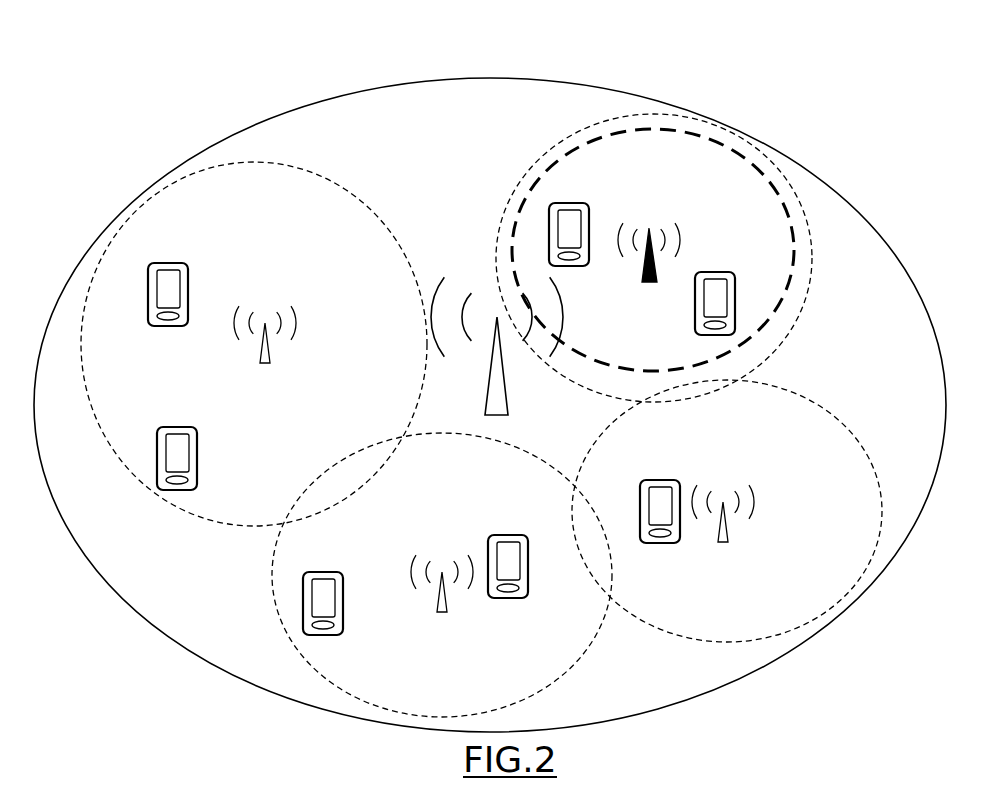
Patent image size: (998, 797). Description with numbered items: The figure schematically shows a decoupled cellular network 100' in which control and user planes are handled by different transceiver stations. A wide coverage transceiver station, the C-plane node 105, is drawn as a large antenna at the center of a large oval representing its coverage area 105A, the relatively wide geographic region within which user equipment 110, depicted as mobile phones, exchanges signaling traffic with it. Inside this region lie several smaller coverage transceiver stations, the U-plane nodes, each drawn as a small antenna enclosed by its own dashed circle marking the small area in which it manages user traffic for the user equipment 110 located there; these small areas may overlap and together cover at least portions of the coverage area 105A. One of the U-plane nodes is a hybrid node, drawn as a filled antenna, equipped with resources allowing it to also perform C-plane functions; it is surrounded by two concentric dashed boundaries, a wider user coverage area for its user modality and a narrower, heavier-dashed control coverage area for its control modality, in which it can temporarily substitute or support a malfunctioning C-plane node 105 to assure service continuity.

The decoupled cellular network 100' is at (954, 116).
The C-plane node 105 is at (500, 378).
The coverage area 105A is at (630, 95).
The user equipment 110 is at (183, 263).